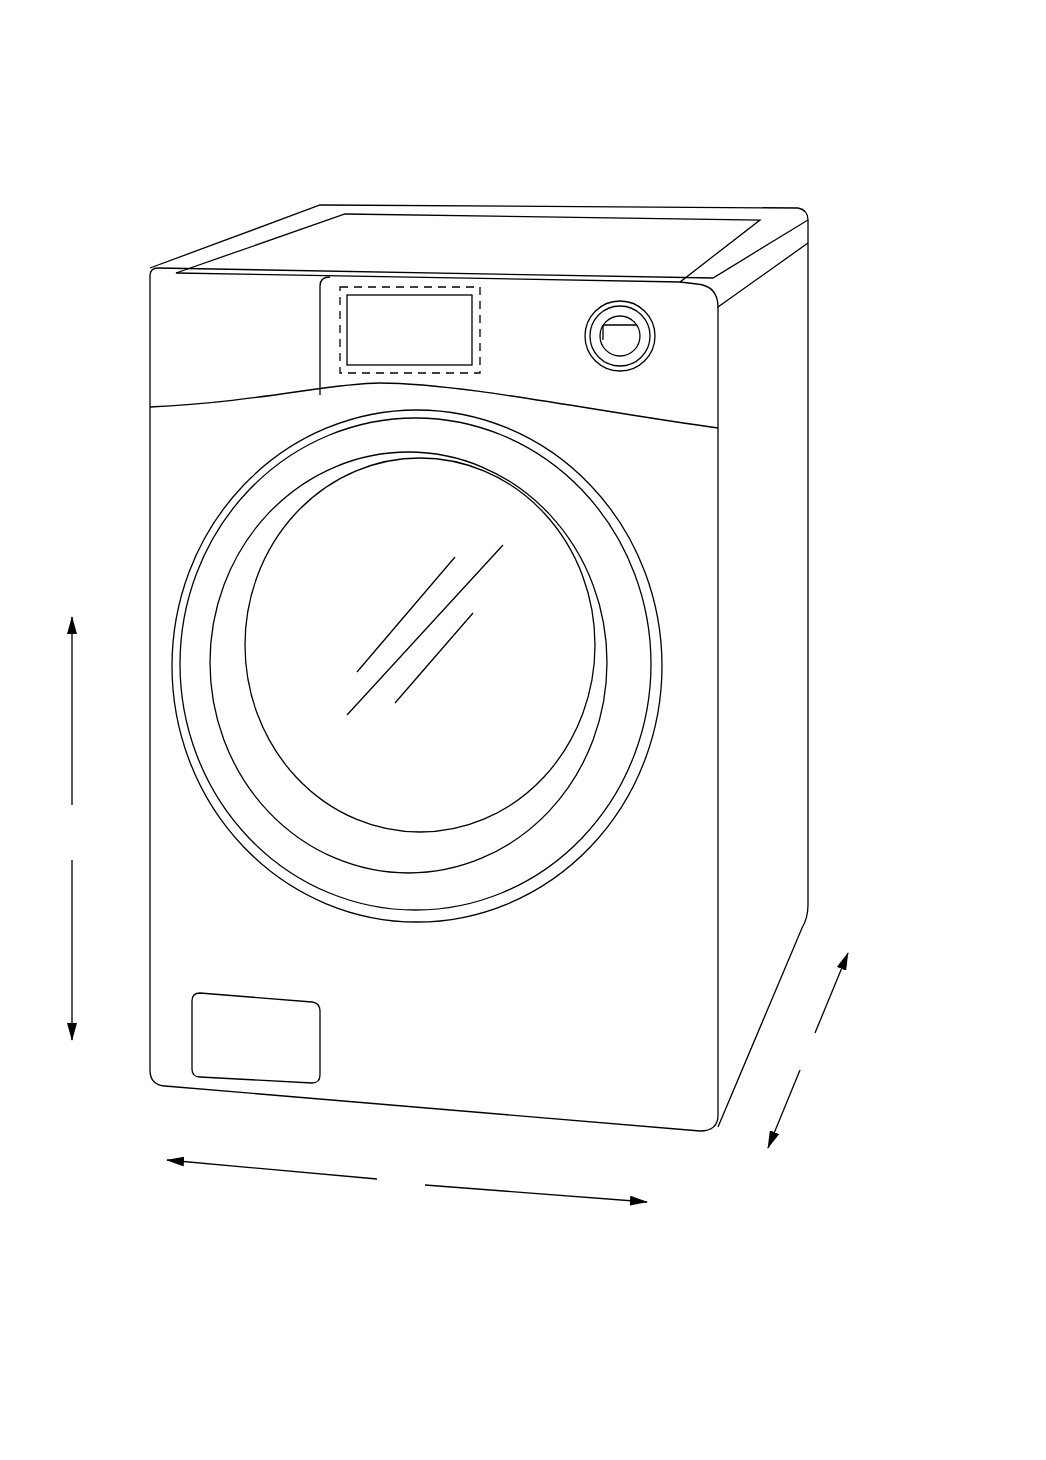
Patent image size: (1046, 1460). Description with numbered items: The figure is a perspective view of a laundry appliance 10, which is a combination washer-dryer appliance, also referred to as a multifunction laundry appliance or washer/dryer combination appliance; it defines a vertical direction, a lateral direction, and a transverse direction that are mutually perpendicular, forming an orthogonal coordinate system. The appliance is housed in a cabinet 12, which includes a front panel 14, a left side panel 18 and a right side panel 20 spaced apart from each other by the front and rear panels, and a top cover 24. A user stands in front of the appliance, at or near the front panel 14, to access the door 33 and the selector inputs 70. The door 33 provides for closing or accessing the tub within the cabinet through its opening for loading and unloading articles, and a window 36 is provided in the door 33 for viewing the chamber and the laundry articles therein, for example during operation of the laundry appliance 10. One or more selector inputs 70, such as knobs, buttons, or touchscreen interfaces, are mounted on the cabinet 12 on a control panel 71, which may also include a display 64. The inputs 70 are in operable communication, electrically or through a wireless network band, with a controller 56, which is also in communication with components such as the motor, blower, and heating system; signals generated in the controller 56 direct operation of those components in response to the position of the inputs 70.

The laundry appliance 10 is at (209, 90).
The cabinet 12 is at (787, 500).
The front panel 14 is at (460, 1030).
The left side panel 18 is at (143, 486).
The right side panel 20 is at (778, 611).
The top cover 24 is at (287, 258).
The door 33 is at (633, 670).
The window 36 is at (533, 757).
The controller 56 is at (350, 314).
The display 64 is at (457, 345).
The selector inputs 70 is at (621, 341).
The control panel 71 is at (548, 326).